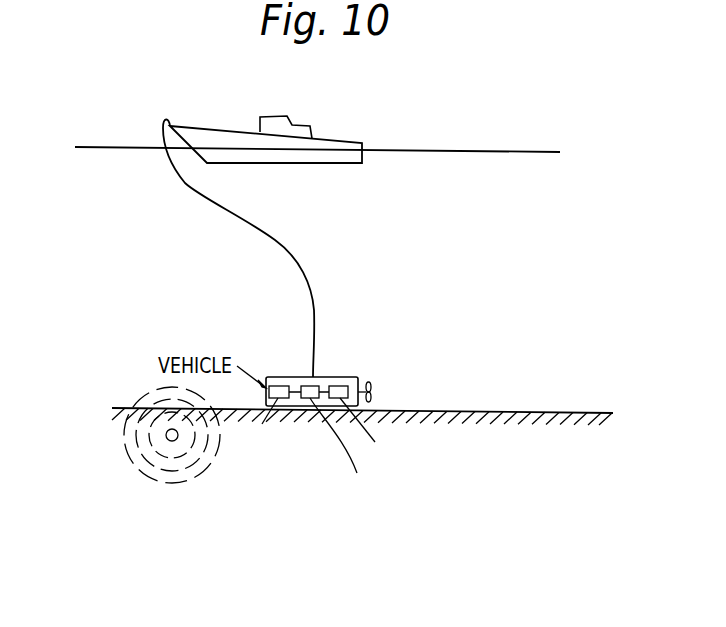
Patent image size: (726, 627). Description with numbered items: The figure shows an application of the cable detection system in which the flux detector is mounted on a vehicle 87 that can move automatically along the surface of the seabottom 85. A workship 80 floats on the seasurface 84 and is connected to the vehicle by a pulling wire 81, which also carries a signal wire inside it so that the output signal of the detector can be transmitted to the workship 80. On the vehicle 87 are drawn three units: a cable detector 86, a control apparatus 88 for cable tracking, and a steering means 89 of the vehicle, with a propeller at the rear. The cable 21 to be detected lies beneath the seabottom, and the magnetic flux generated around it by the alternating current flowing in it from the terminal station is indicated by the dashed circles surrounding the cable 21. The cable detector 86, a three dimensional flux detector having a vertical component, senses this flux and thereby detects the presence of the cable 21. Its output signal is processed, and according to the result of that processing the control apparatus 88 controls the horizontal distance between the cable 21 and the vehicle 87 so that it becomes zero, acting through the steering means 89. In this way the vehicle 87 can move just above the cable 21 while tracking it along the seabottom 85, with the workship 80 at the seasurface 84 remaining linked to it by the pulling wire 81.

The workship 80 is at (338, 139).
The pulling wire 81 is at (310, 280).
The seasurface 84 is at (530, 151).
The surface of the seabottom 85 is at (522, 412).
The cable detector 86 is at (283, 381).
The vehicle 87 is at (369, 386).
The control apparatus 88 is at (318, 383).
The steering means 89 is at (348, 385).
The cable 21 is at (178, 440).